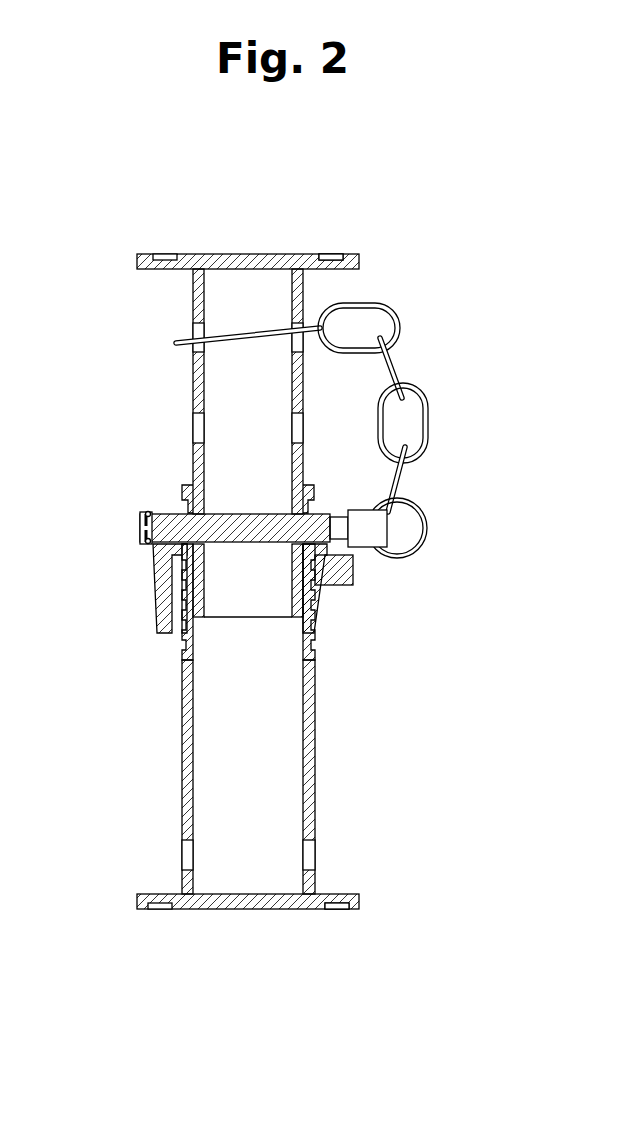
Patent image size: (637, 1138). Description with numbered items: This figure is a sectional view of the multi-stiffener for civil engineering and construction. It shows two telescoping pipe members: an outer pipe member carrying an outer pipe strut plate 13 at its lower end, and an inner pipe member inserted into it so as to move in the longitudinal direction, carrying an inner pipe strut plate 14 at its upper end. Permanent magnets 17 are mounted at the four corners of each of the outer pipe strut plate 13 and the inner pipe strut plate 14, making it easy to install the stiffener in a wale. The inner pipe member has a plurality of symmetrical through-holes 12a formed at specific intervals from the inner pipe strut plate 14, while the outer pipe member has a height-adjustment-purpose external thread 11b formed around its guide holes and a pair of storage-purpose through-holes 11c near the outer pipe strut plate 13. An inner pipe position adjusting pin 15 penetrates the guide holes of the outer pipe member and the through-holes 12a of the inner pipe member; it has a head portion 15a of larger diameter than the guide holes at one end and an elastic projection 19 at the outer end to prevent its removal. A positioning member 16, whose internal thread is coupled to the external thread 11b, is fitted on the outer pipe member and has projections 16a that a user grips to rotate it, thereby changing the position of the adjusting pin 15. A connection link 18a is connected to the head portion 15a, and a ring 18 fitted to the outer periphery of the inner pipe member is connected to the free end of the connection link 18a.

The height-adjustment-purpose external thread 11b is at (318, 643).
The storage-purpose through-holes 11c is at (188, 850).
The through-holes 12a is at (197, 427).
The outer pipe strut plate 13 is at (335, 895).
The inner pipe strut plate 14 is at (187, 254).
The inner pipe position adjusting pin 15 is at (245, 537).
The head portion 15a is at (372, 529).
The positioning member 16 is at (330, 595).
The projections 16a is at (353, 566).
The permanent magnets 17 is at (329, 254).
The ring 18 is at (185, 341).
The connection link 18a is at (430, 418).
The elastic projection 19 is at (148, 512).